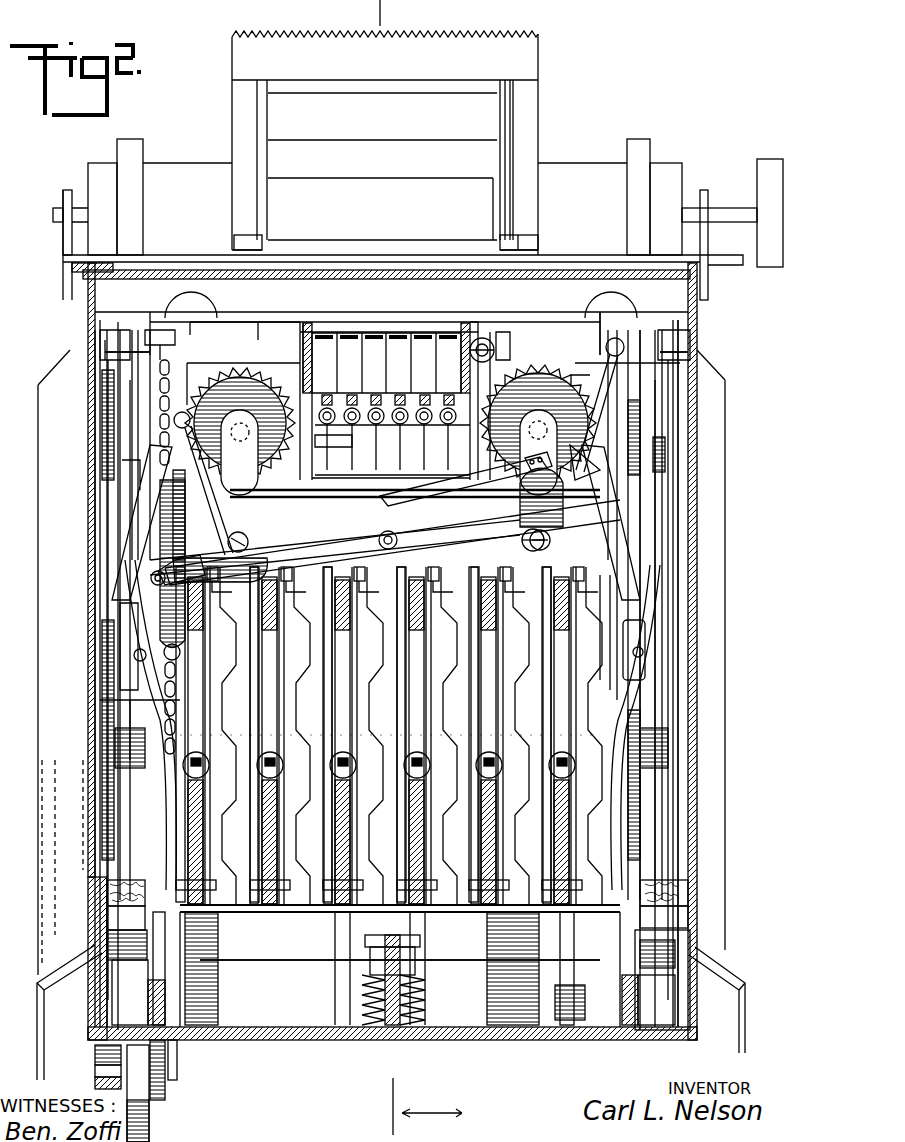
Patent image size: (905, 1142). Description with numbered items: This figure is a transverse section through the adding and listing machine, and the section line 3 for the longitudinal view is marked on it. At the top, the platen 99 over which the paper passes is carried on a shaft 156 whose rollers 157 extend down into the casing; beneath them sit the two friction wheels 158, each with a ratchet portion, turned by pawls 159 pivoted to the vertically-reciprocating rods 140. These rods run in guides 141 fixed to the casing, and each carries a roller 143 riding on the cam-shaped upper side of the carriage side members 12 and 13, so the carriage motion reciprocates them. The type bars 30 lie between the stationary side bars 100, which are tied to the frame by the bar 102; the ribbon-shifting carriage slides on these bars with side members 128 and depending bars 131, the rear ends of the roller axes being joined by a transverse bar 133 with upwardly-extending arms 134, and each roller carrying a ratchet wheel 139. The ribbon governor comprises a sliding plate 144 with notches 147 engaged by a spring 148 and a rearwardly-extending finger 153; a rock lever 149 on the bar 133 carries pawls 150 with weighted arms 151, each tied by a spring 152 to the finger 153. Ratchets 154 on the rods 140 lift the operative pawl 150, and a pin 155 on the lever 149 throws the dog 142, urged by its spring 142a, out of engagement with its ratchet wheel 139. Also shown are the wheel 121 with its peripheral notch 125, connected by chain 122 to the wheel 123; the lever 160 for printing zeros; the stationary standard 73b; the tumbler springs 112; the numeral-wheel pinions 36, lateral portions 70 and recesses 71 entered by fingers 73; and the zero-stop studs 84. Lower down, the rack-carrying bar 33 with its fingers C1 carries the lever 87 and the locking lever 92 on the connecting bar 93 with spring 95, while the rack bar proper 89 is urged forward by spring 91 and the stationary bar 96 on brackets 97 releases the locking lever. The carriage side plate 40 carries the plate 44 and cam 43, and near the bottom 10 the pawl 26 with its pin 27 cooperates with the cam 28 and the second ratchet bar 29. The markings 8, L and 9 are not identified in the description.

The section line 3 is at (412, 567).
The platen 99 is at (385, 143).
The rollers 157 is at (130, 151).
The shaft 156 is at (712, 215).
The friction wheels 158 is at (85, 298).
The guides 141 is at (100, 350).
The wheel 121 is at (150, 330).
The stationary standard 73b is at (200, 308).
The lever 160 is at (290, 306).
The side bars 100 is at (330, 322).
The type bars 30 is at (375, 340).
The spring 112 is at (440, 422).
The side members 128 is at (484, 338).
The bar 102 is at (522, 322).
The bars 131 is at (520, 355).
The ratchet wheel 139 is at (245, 355).
The arms 134 is at (390, 430).
The plate 144 is at (415, 499).
The spring 148 is at (425, 490).
The transverse bar 133 is at (312, 536).
The rock lever 149 is at (372, 540).
The notches 147 is at (397, 530).
The pawl 150 is at (228, 542).
The weighted arm 151 is at (275, 578).
The stud 84 is at (508, 572).
The spring 152 is at (218, 527).
The finger 153 is at (580, 460).
The ratchets 154 is at (140, 470).
The pin 155 is at (150, 580).
The dog 142 is at (125, 510).
The rods 140 is at (104, 548).
The pawls 159 is at (105, 603).
The chain 122 is at (100, 700).
The spring 142a is at (630, 800).
The wheel 123 is at (158, 808).
The peripheral notch 125 is at (215, 534).
The key levers 8 is at (389, 735).
The key levers L is at (390, 736).
The key stems 9 is at (400, 865).
The pinion 36 is at (432, 700).
The vertical connecting bar 93 is at (545, 640).
The spring 95 is at (548, 707).
The spring 91 is at (262, 770).
The lower rack bar proper 89 is at (356, 798).
The laterally-extending portions 70 is at (600, 633).
The recesses 71 is at (596, 667).
The fingers 73 is at (612, 590).
The lever 87 is at (320, 912).
The locking lever 92 is at (327, 968).
The brackets 97 is at (218, 988).
The rack-carrying bar 33 is at (360, 905).
The stationary transverse bar 96 is at (443, 930).
The fingers C1 is at (490, 955).
The roller 143 is at (600, 962).
The bottom 10 is at (518, 1030).
The side member 12 is at (628, 1028).
The horizontal plate 44 is at (118, 930).
The cam 43 is at (115, 968).
The side plate 40 is at (150, 990).
The side member 13 is at (152, 1010).
The cam 28 is at (100, 1062).
The pin 27 is at (118, 1072).
The second ratchet bar 29 is at (100, 1088).
The pawl 26 is at (140, 1095).